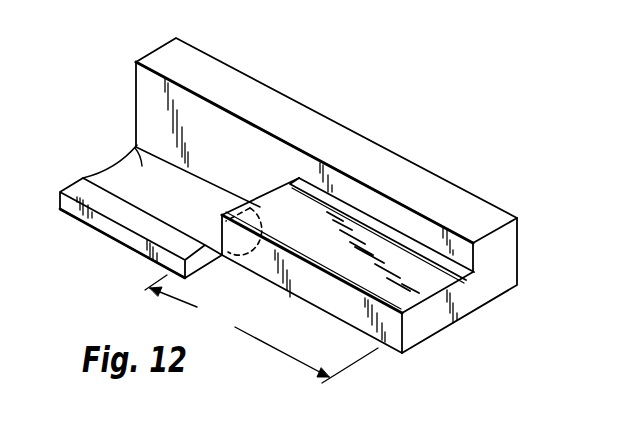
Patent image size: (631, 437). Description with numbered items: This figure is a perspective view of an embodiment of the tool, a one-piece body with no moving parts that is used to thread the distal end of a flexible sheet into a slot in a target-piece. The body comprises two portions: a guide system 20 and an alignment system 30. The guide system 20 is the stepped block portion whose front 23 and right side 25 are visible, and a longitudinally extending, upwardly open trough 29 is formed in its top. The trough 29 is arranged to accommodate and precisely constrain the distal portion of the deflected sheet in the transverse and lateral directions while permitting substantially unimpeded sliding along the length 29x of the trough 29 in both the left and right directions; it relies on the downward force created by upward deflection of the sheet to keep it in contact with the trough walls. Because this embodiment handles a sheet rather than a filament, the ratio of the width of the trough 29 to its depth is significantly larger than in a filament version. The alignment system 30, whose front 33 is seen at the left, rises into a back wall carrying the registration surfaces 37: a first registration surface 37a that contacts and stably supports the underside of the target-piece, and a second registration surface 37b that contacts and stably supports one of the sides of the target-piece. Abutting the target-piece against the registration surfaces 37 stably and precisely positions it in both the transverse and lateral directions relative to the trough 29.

The guide system 20 is at (313, 222).
The front 23 is at (310, 293).
The right side 25 is at (508, 263).
The trough 29 is at (420, 282).
The length of the trough 29x is at (334, 402).
The alignment system 30 is at (121, 242).
The front 33 is at (121, 228).
The registration surfaces 37 is at (292, 155).
The first registration surface 37a is at (118, 172).
The second registration surface 37b is at (254, 159).